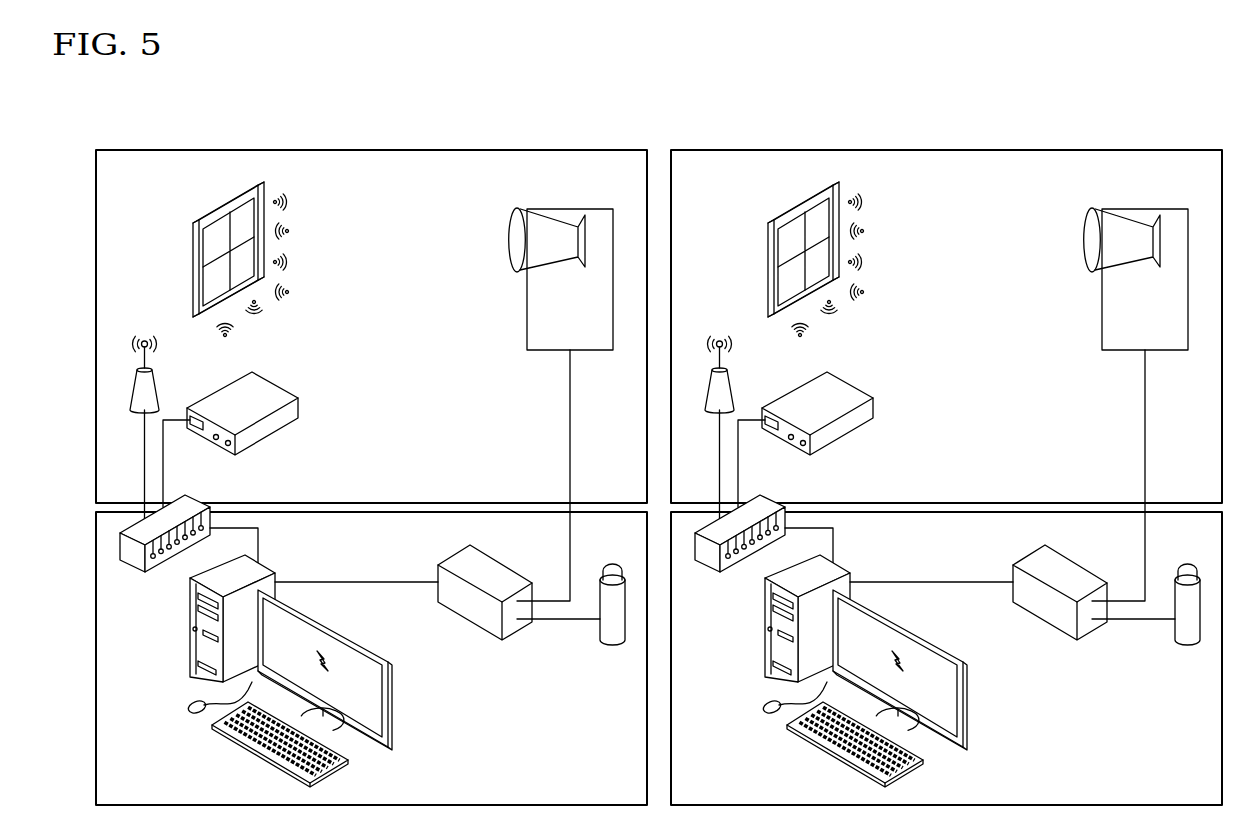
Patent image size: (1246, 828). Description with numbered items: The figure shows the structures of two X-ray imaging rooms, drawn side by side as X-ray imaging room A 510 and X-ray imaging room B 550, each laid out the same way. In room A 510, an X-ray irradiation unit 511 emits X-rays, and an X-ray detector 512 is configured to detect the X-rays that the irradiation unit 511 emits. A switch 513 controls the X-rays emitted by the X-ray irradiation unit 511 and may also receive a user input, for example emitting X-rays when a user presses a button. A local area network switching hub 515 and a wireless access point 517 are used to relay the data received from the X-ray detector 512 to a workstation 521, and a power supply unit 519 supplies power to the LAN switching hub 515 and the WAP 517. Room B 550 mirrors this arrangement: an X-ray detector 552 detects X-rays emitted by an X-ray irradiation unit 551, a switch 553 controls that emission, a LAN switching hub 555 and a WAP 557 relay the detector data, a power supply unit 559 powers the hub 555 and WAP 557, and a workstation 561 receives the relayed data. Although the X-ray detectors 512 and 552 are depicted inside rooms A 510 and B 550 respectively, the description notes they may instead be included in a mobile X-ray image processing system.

The X-ray imaging room A 510 is at (372, 150).
The X-ray irradiation unit 511 is at (570, 209).
The X-ray detector 512 is at (223, 202).
The switch 513 is at (470, 624).
The local area network (LAN) switching hub 515 is at (132, 566).
The wireless access point (WAP) 517 is at (157, 390).
The power supply unit 519 is at (272, 383).
The workstation 521 is at (332, 627).
The X-ray imaging room B 550 is at (946, 462).
The X-ray irradiation unit 551 is at (1144, 390).
The X-ray detector 552 is at (812, 249).
The switch 553 is at (1106, 608).
The LAN switching hub 555 is at (756, 554).
The WAP 557 is at (742, 427).
The power supply unit 559 is at (818, 423).
The workstation 561 is at (887, 671).